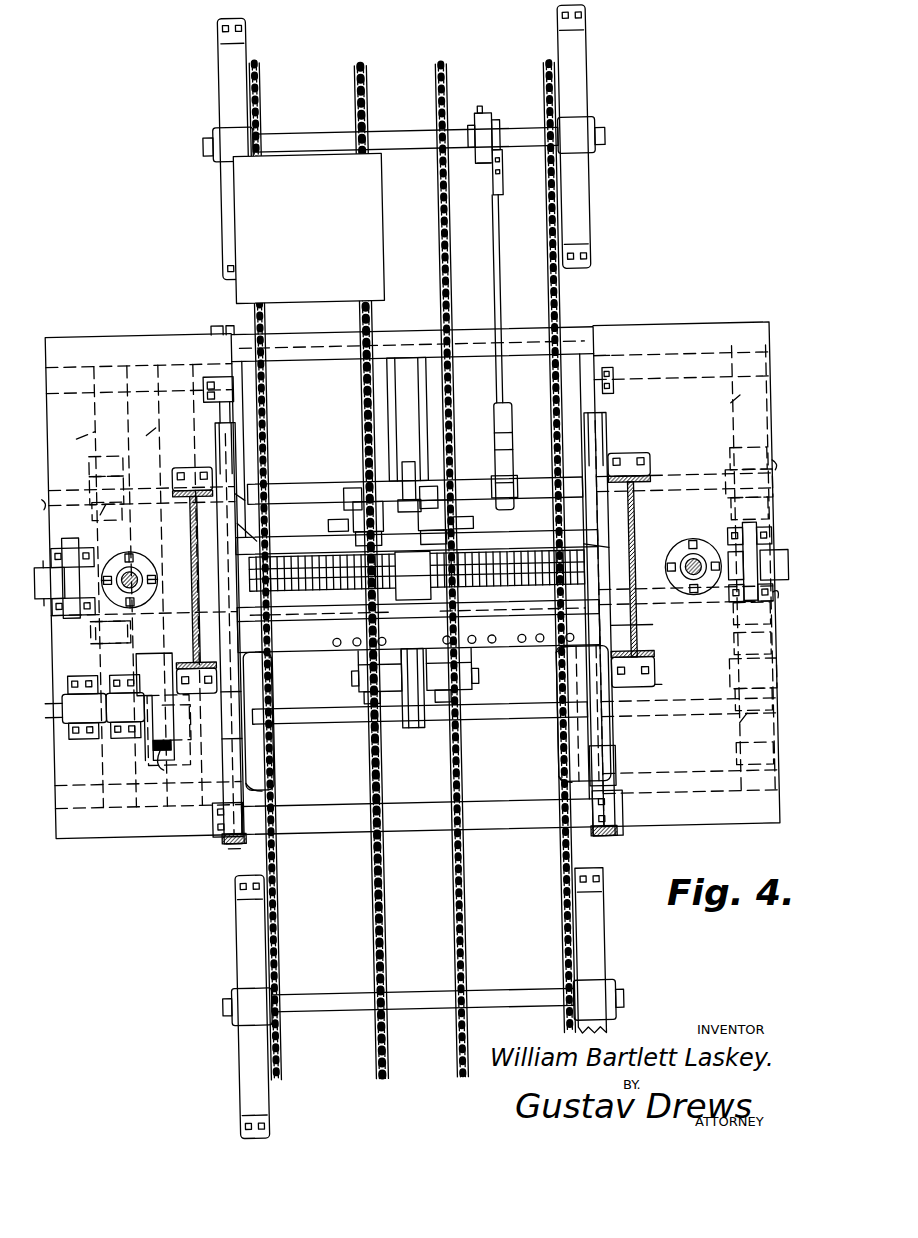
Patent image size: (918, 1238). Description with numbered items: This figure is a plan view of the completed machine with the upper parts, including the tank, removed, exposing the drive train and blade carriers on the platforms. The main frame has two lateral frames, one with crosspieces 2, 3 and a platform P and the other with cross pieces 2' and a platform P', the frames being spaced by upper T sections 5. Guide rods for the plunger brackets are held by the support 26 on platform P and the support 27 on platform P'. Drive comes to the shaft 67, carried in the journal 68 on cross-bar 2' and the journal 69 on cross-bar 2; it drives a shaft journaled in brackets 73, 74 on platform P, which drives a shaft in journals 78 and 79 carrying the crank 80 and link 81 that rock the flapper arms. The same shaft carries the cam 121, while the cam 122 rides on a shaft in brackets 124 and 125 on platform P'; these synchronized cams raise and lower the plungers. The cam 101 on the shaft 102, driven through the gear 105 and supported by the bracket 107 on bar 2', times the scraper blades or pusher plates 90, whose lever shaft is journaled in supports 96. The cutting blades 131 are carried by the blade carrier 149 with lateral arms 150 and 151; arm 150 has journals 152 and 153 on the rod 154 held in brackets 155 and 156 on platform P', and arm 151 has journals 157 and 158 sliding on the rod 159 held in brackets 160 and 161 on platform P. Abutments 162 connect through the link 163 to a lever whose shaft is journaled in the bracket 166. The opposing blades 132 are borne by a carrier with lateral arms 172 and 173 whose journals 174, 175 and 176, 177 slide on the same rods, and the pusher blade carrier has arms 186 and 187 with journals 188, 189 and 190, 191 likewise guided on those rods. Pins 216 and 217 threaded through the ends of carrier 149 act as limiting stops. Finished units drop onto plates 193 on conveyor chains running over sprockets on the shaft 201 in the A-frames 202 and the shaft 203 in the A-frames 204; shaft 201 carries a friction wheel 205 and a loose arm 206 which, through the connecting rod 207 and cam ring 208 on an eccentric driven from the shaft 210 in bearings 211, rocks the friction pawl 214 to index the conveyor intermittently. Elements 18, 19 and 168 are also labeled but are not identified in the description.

The platform P is at (144, 603).
The platform P' is at (687, 590).
The crosspiece 2 is at (76, 442).
The cross piece 2' is at (713, 417).
The crosspiece 3 is at (144, 438).
The upper T section 5 is at (497, 322).
The post 18 is at (183, 528).
The post 19 is at (645, 510).
The support 26 is at (122, 552).
The support 27 is at (702, 553).
The shaft 67 is at (785, 607).
The journal 68 is at (772, 618).
The journal 69 is at (97, 628).
The bracket 73 is at (49, 583).
The bracket 74 is at (52, 598).
The journal 78 is at (76, 707).
The journal 79 is at (125, 707).
The crank 80 is at (150, 735).
The link 81 is at (162, 765).
The scraper blade 90 is at (330, 644).
The support 96 is at (472, 670).
The cam 101 is at (410, 730).
The shaft 102 is at (505, 714).
The gear 105 is at (188, 735).
The bracket 107 is at (738, 737).
The cam 121 is at (62, 538).
The cam 122 is at (758, 534).
The bracket 124 is at (730, 612).
The bracket 125 is at (776, 566).
The cutting blade 131 is at (332, 558).
The cutting blade 132 is at (258, 606).
The blade carrier 149 is at (357, 540).
The lateral arm 150 is at (612, 450).
The lateral arm 151 is at (230, 455).
The journal 152 is at (610, 430).
The journal 153 is at (560, 538).
The rod 154 is at (615, 360).
The bracket 155 is at (618, 396).
The bracket 156 is at (615, 836).
The journal 157 is at (232, 432).
The journal 158 is at (242, 490).
The rod 159 is at (238, 404).
The bracket 160 is at (238, 384).
The bracket 161 is at (217, 834).
The abutment 162 is at (413, 575).
The link 163 is at (412, 567).
The bracket 166 is at (360, 504).
The post 168 is at (412, 462).
The lateral arm 172 is at (652, 694).
The lateral arm 173 is at (248, 688).
The journal 174 is at (652, 630).
The journal 175 is at (615, 733).
The journal 176 is at (357, 680).
The journal 177 is at (240, 734).
The lateral arm 186 is at (562, 740).
The lateral arm 187 is at (262, 752).
The journal 188 is at (585, 663).
The journal 189 is at (590, 768).
The journal 190 is at (278, 658).
The journal 191 is at (242, 782).
The plate 193 is at (245, 222).
The shaft 201 is at (422, 131).
The A-frame 202 is at (243, 90).
The shaft 203 is at (440, 992).
The A-frame 204 is at (238, 943).
The friction wheel 205 is at (494, 125).
The arm 206 is at (487, 166).
The connecting rod 207 is at (512, 190).
The cam ring 208 is at (498, 456).
The shaft 210 is at (48, 492).
The bearing 211 is at (108, 498).
The friction pawl 214 is at (491, 108).
The pin 216 is at (603, 552).
The pin 217 is at (262, 536).